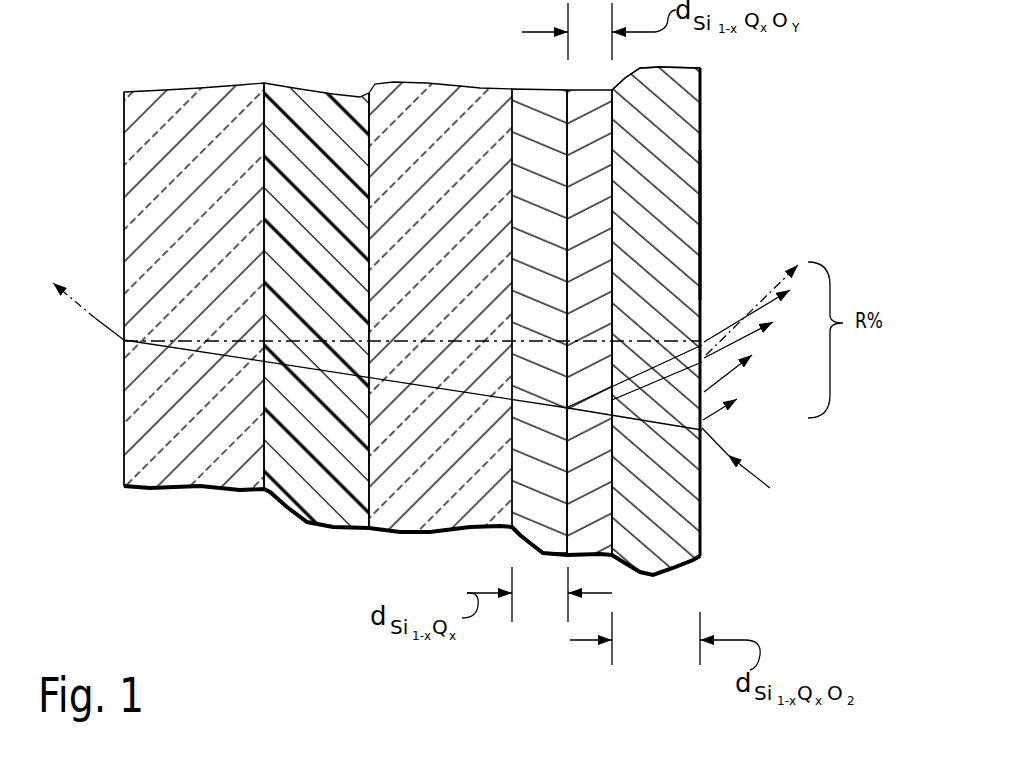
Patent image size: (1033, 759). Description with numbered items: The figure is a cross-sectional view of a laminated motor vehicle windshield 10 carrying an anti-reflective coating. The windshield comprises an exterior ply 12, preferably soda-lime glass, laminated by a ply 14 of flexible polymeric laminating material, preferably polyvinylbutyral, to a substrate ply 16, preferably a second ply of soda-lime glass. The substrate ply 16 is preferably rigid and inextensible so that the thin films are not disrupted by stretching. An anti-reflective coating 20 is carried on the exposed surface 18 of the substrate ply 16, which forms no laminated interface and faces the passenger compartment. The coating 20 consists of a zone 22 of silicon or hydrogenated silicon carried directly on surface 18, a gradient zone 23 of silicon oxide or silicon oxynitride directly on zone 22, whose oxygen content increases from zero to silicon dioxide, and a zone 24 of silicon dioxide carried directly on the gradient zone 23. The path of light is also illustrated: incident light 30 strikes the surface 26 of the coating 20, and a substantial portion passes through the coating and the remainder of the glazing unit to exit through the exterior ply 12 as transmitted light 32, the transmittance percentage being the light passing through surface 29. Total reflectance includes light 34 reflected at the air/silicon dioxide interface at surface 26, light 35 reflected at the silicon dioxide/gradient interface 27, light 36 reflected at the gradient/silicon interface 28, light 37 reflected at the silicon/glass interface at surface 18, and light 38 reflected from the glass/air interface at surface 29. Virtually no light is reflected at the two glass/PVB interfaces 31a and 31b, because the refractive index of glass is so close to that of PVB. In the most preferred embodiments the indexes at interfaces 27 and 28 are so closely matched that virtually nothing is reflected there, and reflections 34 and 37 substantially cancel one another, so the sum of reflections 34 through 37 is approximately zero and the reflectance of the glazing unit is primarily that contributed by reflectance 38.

The motor vehicle windshield 10 is at (212, 72).
The exterior ply 12 is at (197, 478).
The ply of flexible polymeric laminating material 14 is at (319, 90).
The substrate ply 16 is at (388, 515).
The exposed surface 18 is at (513, 110).
The anti-reflective coating 20 is at (712, 213).
The zone of Si1-xQx 22 is at (540, 528).
The gradient zone 23 is at (613, 88).
The zone of silicon dioxide 24 is at (702, 80).
The surface of the anti-reflective coating 26 is at (705, 257).
The SiO2/Si1-xQxOy interface 27 is at (650, 68).
The Si1-xQxOy/Si1-xQx interface 28 is at (570, 100).
The glass/air surface 29 is at (124, 184).
The incident light 30 is at (770, 488).
The glass/PVB interface 31a is at (281, 85).
The glass/PVB interface 31b is at (367, 97).
The transmitted light 32 is at (97, 318).
The light reflected at the air/SiO2 interface 34 is at (713, 415).
The light reflected at the SiO2/Si1-xQxOy interface 35 is at (730, 377).
The light reflected at the Si1-xQxOy/Si1-xQx interface 36 is at (752, 350).
The light reflected at the Si1-xQx/glass interface 37 is at (772, 320).
The light reflected from the glass/air interface 38 is at (738, 320).